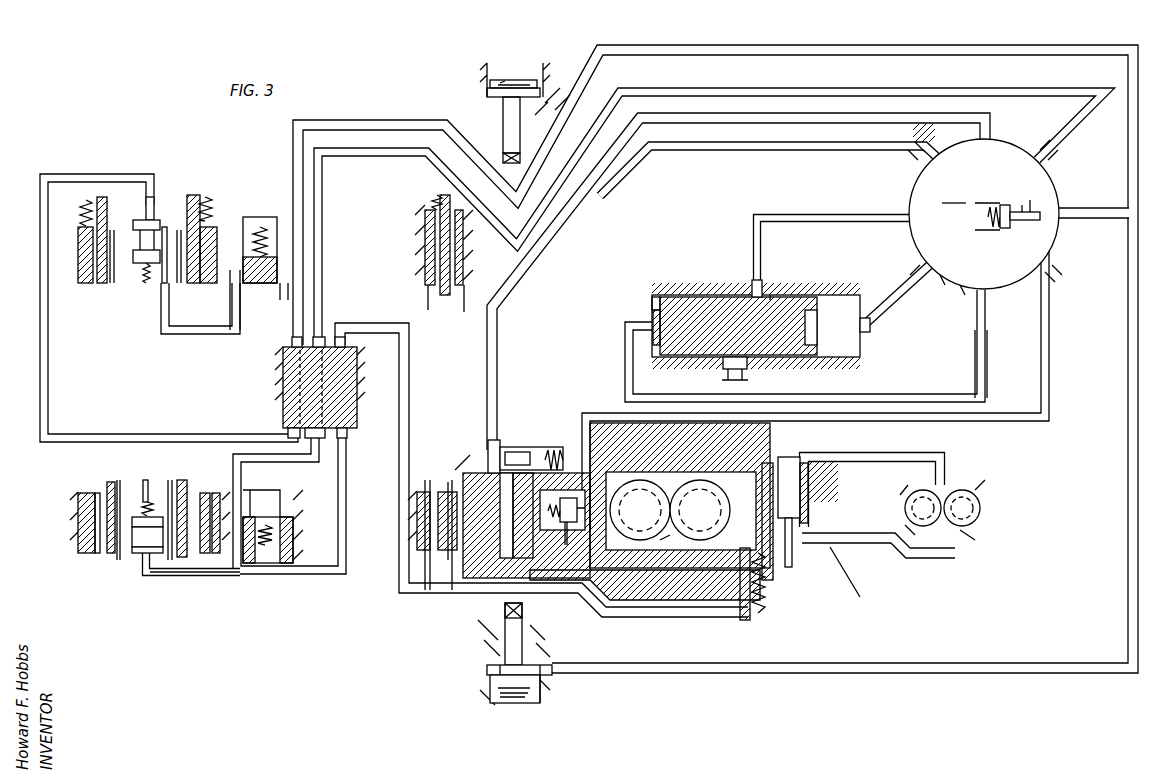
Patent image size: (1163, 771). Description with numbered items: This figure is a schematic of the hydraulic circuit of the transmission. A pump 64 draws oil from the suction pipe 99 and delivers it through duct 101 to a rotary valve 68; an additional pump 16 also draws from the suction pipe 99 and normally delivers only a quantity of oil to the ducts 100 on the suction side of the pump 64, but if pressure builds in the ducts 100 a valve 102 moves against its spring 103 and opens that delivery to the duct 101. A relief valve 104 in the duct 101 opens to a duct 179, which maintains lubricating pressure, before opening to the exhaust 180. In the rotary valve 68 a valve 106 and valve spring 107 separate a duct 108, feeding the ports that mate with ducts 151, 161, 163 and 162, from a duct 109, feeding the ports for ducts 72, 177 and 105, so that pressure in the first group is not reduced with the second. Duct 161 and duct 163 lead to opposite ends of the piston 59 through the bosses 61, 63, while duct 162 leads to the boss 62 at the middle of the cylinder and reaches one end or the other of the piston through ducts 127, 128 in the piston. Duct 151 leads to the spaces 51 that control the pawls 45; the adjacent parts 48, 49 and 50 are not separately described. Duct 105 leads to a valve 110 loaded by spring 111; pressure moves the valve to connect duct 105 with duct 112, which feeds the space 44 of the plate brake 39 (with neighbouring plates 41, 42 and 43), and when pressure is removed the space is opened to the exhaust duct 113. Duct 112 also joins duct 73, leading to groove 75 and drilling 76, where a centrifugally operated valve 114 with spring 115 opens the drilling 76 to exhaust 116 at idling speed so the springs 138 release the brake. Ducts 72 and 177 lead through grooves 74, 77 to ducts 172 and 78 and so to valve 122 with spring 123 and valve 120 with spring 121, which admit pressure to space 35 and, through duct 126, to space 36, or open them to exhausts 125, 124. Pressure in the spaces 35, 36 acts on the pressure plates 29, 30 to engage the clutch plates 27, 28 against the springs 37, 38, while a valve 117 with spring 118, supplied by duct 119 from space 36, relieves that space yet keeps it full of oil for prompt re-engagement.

The gear pump 16 is at (955, 530).
The clutch plate 27 is at (85, 553).
The clutch plate 28 is at (218, 555).
The pressure plate 29 is at (100, 555).
The pressure plate 30 is at (203, 555).
The space 35 is at (118, 560).
The space 36 is at (163, 576).
The spring 37 is at (88, 198).
The spring 38 is at (205, 197).
The plate brake 39 is at (420, 517).
The clutch plate 41 is at (440, 540).
The clutch member 42 is at (430, 550).
The clutch member 43 is at (430, 553).
The space 44 is at (455, 553).
The pawls 45 is at (523, 630).
The valve seat 48 is at (540, 693).
The valve body 49 is at (490, 680).
The valve disc 50 is at (545, 678).
The spaces 51 is at (490, 668).
The piston 59 is at (700, 300).
The boss 61 is at (628, 320).
The boss 62 is at (752, 287).
The boss 63 is at (870, 328).
The pump 64 is at (648, 535).
The rotary valve 68 is at (985, 217).
The duct 72 is at (300, 130).
The duct 73 is at (410, 352).
The groove 74 is at (289, 431).
The groove 75 is at (358, 406).
The drilling 76 is at (350, 440).
The groove 77 is at (283, 405).
The drilling 78 is at (313, 462).
The suction pipe 99 is at (864, 580).
The ducts 100 is at (792, 460).
The duct 101 is at (1050, 290).
The valve 102 is at (792, 560).
The spring 103 is at (768, 605).
The relief valve 104 is at (610, 512).
The duct 105 is at (912, 150).
The valve 106 is at (1005, 226).
The valve spring 107 is at (988, 217).
The duct 108 is at (1030, 238).
The duct 109 is at (1022, 206).
The valve 110 is at (504, 448).
The spring 111 is at (552, 448).
The duct 112 is at (485, 472).
The exhaust duct 113 is at (480, 520).
The centrifugally operated valve 114 is at (258, 563).
The spring 115 is at (282, 560).
The exhaust 116 is at (295, 535).
The valve 117 is at (270, 222).
The spring 118 is at (258, 225).
The duct 119 is at (238, 331).
The valve 120 is at (148, 574).
The spring 121 is at (146, 500).
The valve 122 is at (152, 196).
The spring 123 is at (147, 285).
The exhaust 124 is at (115, 495).
The exhaust 125 is at (166, 230).
The duct 126 is at (182, 482).
The duct 127 is at (660, 300).
The duct 128 is at (770, 295).
The springs 138 is at (430, 205).
The duct 151 is at (1093, 218).
The duct 161 is at (977, 338).
The duct 162 is at (868, 216).
The duct 163 is at (905, 288).
The duct 172 is at (70, 437).
The duct 177 is at (992, 121).
The duct 179 is at (560, 515).
The exhaust 180 is at (565, 495).